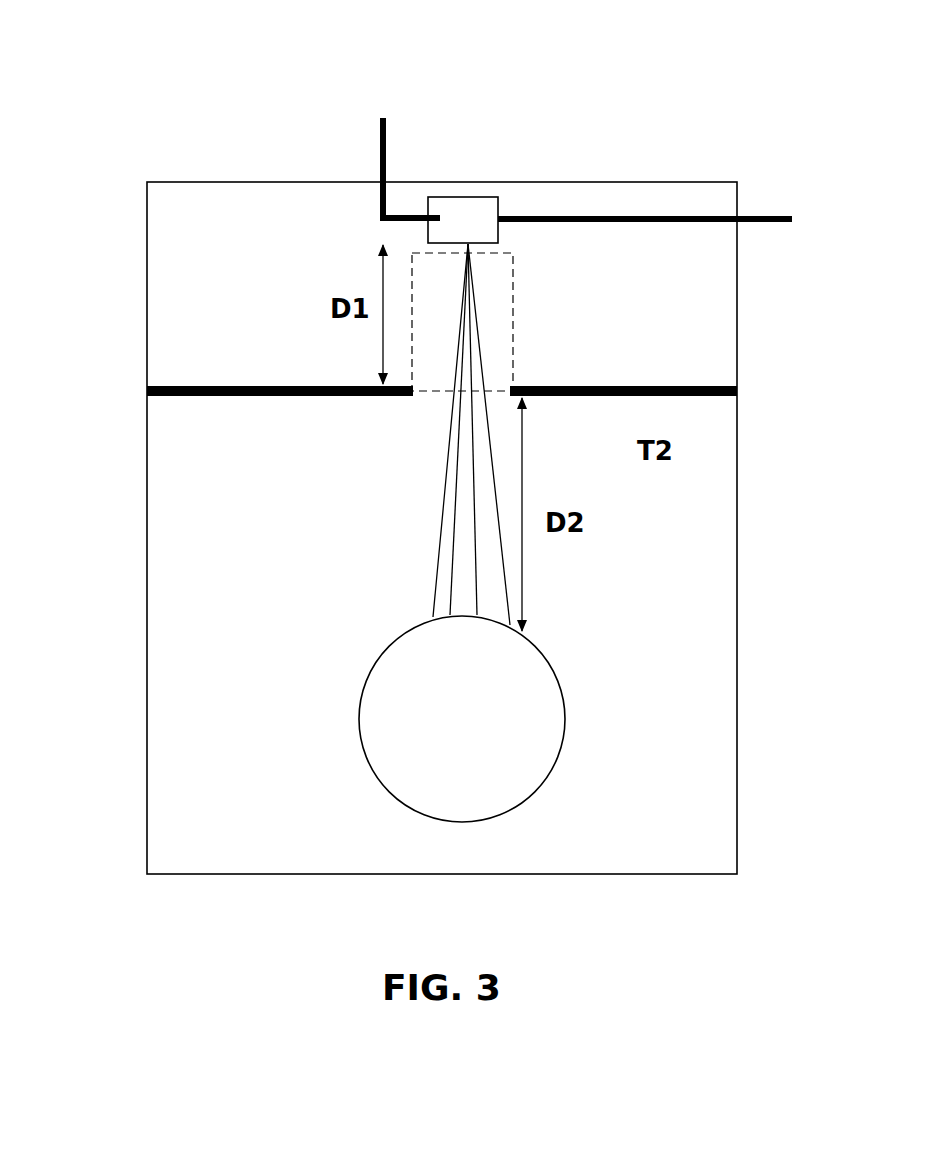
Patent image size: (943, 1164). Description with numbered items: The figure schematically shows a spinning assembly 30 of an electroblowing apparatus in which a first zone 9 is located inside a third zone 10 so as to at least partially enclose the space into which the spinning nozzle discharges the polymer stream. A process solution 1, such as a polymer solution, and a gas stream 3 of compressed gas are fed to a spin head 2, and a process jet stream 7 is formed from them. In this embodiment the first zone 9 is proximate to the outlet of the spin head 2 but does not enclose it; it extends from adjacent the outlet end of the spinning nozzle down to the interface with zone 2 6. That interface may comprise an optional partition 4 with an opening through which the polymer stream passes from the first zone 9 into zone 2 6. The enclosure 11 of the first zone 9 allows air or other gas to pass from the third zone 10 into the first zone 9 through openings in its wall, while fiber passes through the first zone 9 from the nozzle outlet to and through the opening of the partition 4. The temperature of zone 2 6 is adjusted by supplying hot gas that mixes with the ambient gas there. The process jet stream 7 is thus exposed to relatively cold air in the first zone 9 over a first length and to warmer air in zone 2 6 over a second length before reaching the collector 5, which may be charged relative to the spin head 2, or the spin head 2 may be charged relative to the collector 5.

The spinning assembly 30 is at (171, 180).
The process solution 1 is at (377, 161).
The spin head 2 is at (476, 195).
The gas stream 3 is at (781, 215).
The partition 4 is at (739, 391).
The collector 5 is at (521, 710).
The zone 2 6 is at (243, 452).
The process jet stream 7 is at (440, 524).
The first zone 9 is at (533, 288).
The third zone 10 is at (225, 256).
The enclosure 11 is at (516, 342).